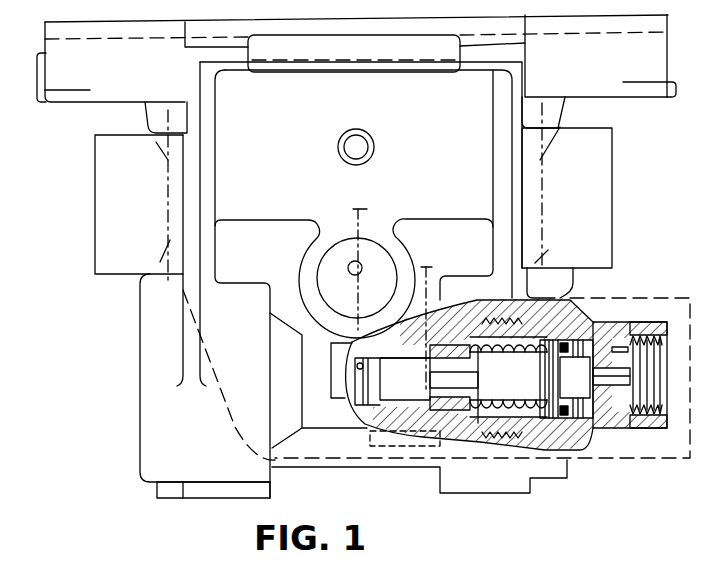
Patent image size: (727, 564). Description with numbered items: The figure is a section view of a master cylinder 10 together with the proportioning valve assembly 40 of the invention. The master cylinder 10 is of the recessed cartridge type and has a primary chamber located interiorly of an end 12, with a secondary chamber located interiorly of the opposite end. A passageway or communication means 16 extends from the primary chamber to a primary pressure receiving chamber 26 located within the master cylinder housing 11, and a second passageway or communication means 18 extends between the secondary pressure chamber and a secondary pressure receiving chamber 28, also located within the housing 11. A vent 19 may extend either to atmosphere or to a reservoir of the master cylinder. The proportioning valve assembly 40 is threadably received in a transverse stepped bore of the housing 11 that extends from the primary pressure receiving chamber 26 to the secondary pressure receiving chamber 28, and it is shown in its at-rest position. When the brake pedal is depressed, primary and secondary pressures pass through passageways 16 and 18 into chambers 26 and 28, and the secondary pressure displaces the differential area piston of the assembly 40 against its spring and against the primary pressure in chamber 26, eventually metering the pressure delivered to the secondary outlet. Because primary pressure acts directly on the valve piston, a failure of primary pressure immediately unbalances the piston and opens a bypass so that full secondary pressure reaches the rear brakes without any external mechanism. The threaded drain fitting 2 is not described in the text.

The drain fitting plug 2 is at (638, 458).
The master cylinder 10 is at (103, 337).
The master cylinder housing 11 is at (217, 151).
The end 12 is at (468, 105).
The passageway or communication means 16 is at (368, 212).
The passageway or communication means 18 is at (392, 444).
The vent 19 is at (431, 270).
The primary pressure receiving chamber 26 is at (350, 375).
The secondary pressure receiving chamber 28 is at (437, 340).
The proportioning valve assembly 40 is at (645, 272).